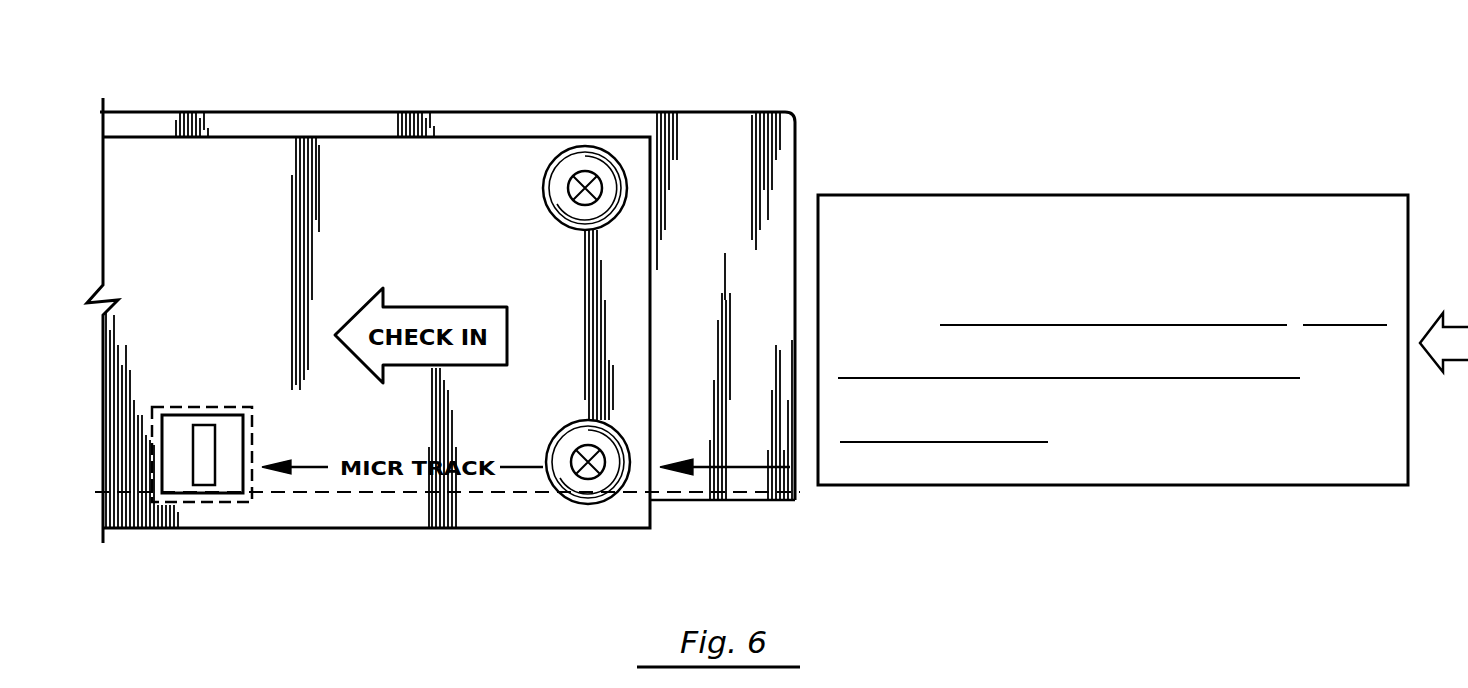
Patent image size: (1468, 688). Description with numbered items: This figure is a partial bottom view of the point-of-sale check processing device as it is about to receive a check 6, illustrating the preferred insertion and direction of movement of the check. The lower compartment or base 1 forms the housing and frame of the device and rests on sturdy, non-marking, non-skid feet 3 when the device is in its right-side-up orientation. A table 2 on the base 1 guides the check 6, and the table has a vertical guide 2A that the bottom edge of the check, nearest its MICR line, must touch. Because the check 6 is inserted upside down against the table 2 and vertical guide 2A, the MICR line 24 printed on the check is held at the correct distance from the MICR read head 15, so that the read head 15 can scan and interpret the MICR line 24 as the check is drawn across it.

The lower compartment or base 1 is at (443, 156).
The table 2 is at (715, 128).
The vertical guide 2A is at (737, 500).
The feet 3 is at (545, 170).
The MICR read head 15 is at (208, 476).
The check 6 is at (1120, 195).
The MICR line 24 is at (1002, 478).